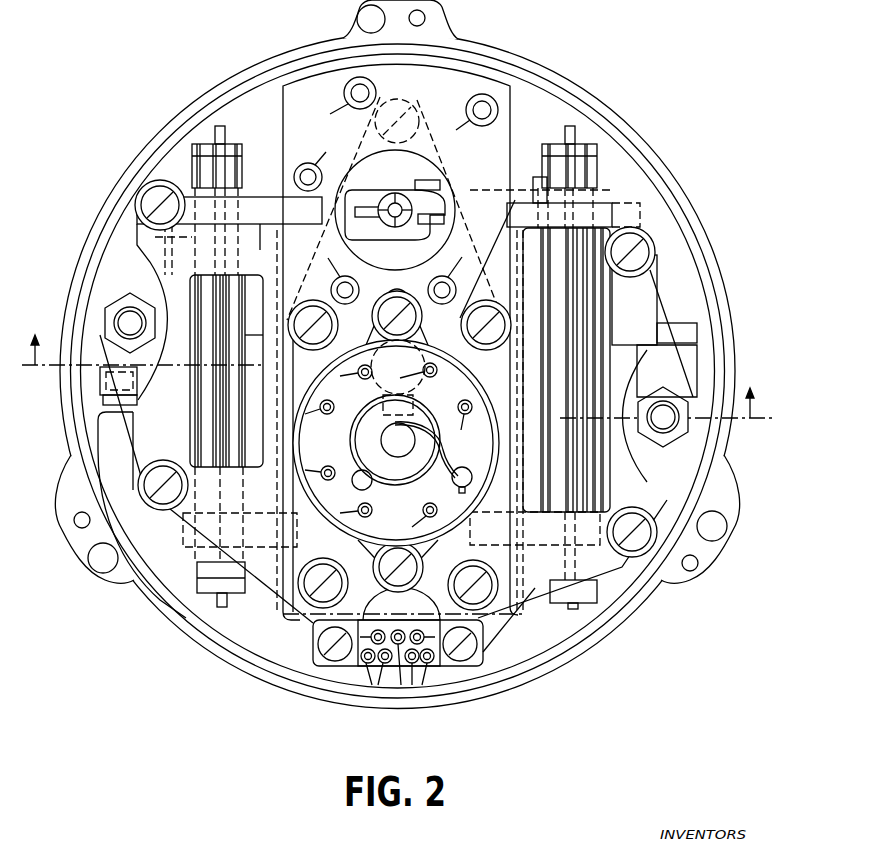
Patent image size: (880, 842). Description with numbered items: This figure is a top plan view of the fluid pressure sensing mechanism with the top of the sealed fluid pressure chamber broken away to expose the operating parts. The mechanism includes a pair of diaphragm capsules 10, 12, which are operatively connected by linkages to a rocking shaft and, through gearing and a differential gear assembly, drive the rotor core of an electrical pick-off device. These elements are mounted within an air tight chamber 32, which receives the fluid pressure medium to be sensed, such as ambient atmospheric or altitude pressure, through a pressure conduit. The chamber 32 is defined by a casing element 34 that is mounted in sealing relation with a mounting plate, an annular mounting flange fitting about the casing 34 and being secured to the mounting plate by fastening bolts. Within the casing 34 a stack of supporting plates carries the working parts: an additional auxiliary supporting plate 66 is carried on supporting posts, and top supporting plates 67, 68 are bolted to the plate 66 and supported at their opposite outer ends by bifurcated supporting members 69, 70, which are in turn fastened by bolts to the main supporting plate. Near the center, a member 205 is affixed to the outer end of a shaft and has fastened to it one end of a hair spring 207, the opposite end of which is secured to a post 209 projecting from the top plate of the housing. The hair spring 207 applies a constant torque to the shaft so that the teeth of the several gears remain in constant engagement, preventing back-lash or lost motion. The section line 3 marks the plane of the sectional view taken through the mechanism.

The section line 3- 3 is at (397, 397).
The diaphragm capsule 10 is at (323, 290).
The diaphragm capsule 12 is at (590, 168).
The air tight chamber 32 is at (300, 68).
The casing element 34 is at (585, 108).
The additional auxiliary supporting plate 66 is at (449, 99).
The top supporting plate 67 is at (205, 190).
The top supporting plate 68 is at (620, 218).
The bifurcated supporting member 69 is at (113, 277).
The bifurcated supporting member 70 is at (665, 308).
The member 205 is at (390, 452).
The hair spring 207 is at (350, 443).
The post 209 is at (455, 486).